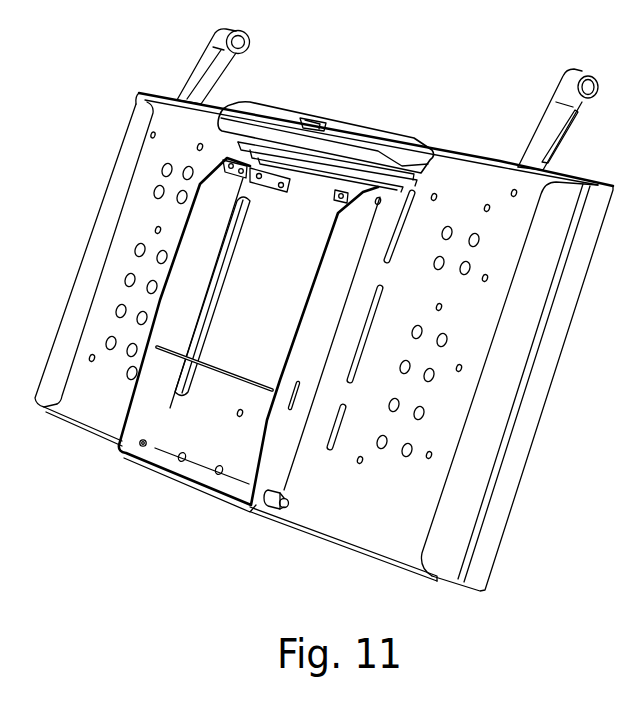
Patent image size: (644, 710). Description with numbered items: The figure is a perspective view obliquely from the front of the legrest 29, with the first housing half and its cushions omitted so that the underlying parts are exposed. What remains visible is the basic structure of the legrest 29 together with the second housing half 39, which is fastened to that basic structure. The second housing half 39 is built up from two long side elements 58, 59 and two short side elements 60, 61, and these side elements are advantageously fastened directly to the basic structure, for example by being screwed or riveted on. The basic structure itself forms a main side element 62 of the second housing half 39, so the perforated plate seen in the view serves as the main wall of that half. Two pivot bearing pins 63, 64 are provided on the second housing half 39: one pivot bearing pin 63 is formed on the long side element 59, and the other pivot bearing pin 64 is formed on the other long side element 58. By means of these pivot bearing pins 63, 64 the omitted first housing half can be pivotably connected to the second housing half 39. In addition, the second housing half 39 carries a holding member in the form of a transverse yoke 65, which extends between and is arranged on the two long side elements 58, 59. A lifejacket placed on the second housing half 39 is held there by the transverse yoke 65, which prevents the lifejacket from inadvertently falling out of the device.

The legrest 29 is at (104, 578).
The second housing half 39 is at (207, 507).
The long side element 58 is at (305, 407).
The long side element 59 is at (202, 268).
The short side element 60 is at (157, 463).
The short side element 61 is at (358, 190).
The main side element 62 is at (297, 235).
The pivot bearing pin 63 is at (139, 447).
The pivot bearing pin 64 is at (283, 508).
The transverse yoke 65 is at (174, 360).